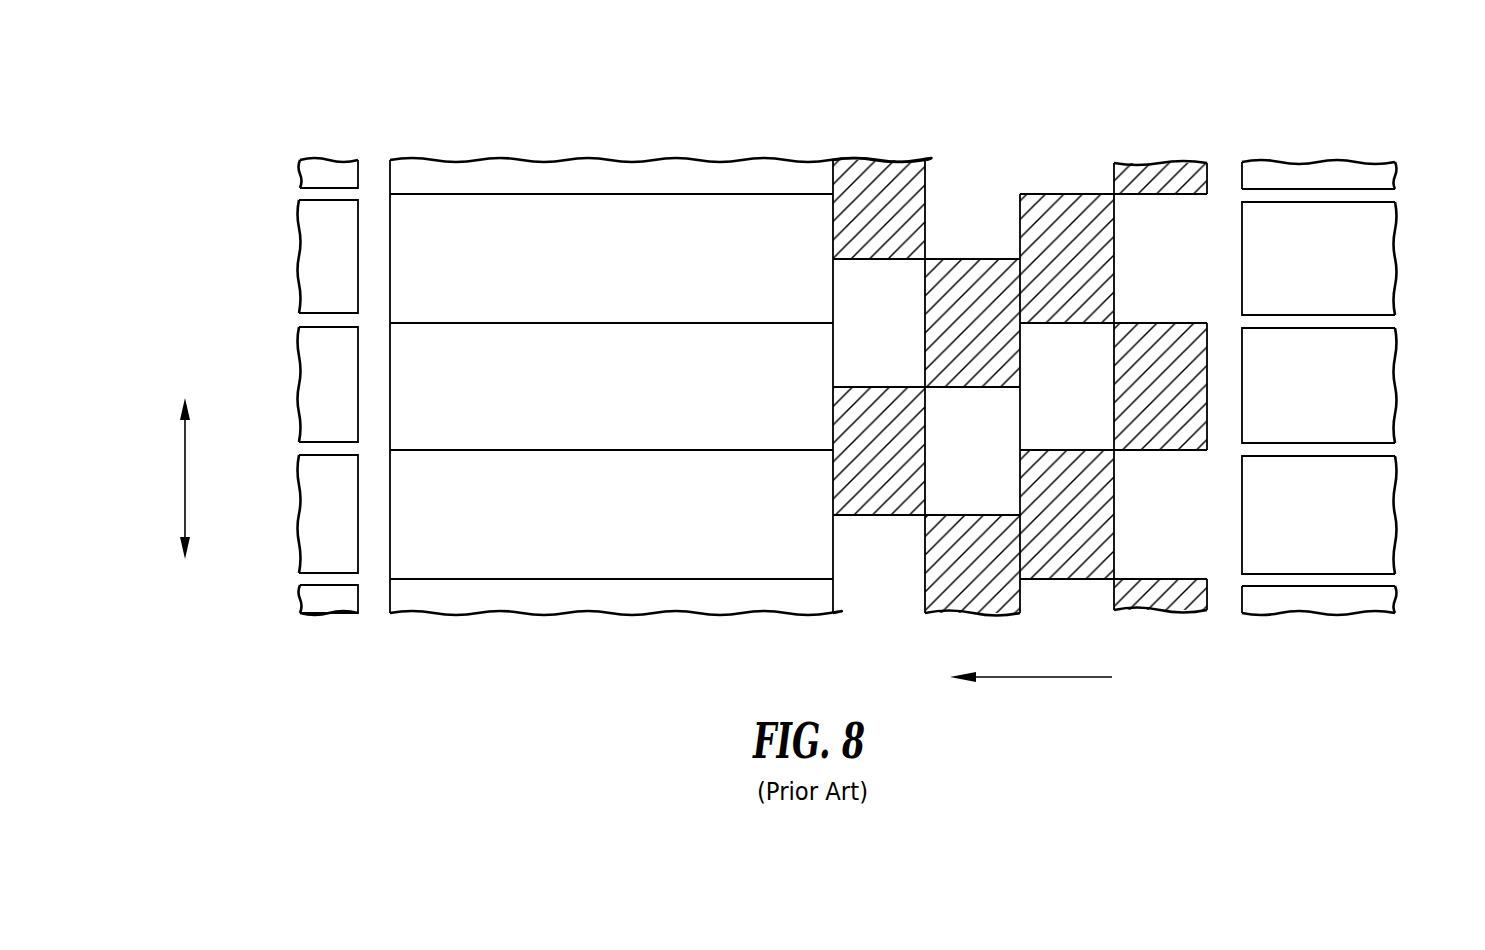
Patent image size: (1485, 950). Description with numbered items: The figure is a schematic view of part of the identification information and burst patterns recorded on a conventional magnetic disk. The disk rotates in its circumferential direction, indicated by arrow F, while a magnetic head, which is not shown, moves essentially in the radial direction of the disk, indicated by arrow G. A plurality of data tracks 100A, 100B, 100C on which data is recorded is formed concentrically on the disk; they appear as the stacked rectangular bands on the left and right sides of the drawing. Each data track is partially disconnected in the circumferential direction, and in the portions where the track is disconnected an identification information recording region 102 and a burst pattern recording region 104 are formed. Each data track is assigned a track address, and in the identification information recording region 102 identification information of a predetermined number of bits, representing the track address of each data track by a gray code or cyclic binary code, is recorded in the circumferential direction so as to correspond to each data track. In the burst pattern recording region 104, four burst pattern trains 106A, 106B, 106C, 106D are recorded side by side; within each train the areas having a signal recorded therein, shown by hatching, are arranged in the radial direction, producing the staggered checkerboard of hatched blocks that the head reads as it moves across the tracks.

The identification information recording region 102 is at (833, 62).
The burst pattern recording region 104 is at (1210, 62).
The burst pattern train 106A is at (923, 131).
The burst pattern train 106B is at (1018, 131).
The burst pattern train 106C is at (1112, 131).
The burst pattern train 106D is at (1208, 131).
The data track 100A is at (297, 251).
The data track 100B is at (296, 388).
The data track 100C is at (296, 518).
The arrow indicating radial direction G is at (183, 468).
The arrow indicating circumferential direction F is at (1038, 678).